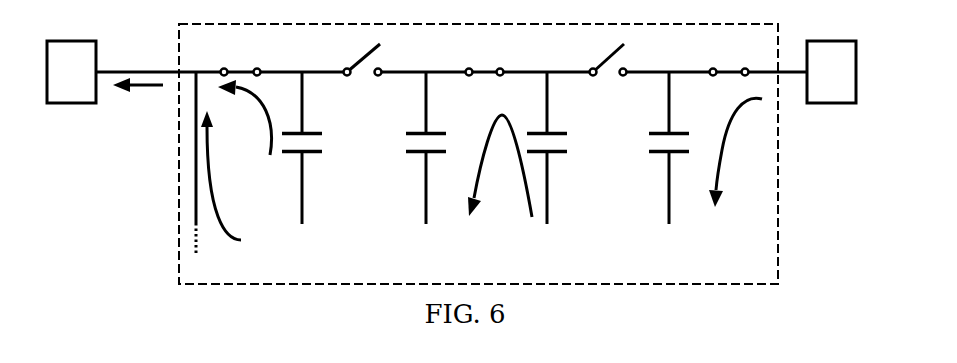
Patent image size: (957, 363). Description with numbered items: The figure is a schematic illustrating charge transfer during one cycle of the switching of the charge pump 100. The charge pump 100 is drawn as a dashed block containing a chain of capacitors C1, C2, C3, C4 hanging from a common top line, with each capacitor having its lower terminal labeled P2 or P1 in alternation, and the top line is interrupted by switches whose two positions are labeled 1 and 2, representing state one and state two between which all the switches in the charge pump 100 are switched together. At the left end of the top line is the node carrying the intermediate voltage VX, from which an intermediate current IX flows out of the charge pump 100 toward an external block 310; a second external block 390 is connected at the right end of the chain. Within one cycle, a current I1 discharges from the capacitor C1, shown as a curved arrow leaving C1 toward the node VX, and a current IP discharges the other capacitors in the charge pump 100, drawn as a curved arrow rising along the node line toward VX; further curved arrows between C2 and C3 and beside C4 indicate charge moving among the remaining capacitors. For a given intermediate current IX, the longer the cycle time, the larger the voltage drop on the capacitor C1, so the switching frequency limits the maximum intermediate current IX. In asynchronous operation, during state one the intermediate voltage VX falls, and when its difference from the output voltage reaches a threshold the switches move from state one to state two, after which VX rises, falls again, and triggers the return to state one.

The charge pump 100 is at (731, 264).
The first circuit block 310 is at (88, 82).
The second circuit block 390 is at (847, 82).
The intermediate voltage VX is at (197, 150).
The intermediate current IX is at (138, 97).
The current I1 is at (245, 117).
The current IP is at (221, 175).
The state one 1 is at (485, 61).
The state two 2 is at (485, 72).
The capacitor C1 is at (308, 148).
The capacitor C2 is at (431, 148).
The capacitor C3 is at (553, 148).
The capacitor C4 is at (675, 148).
The terminal P1 is at (547, 242).
The terminal P2 is at (424, 242).